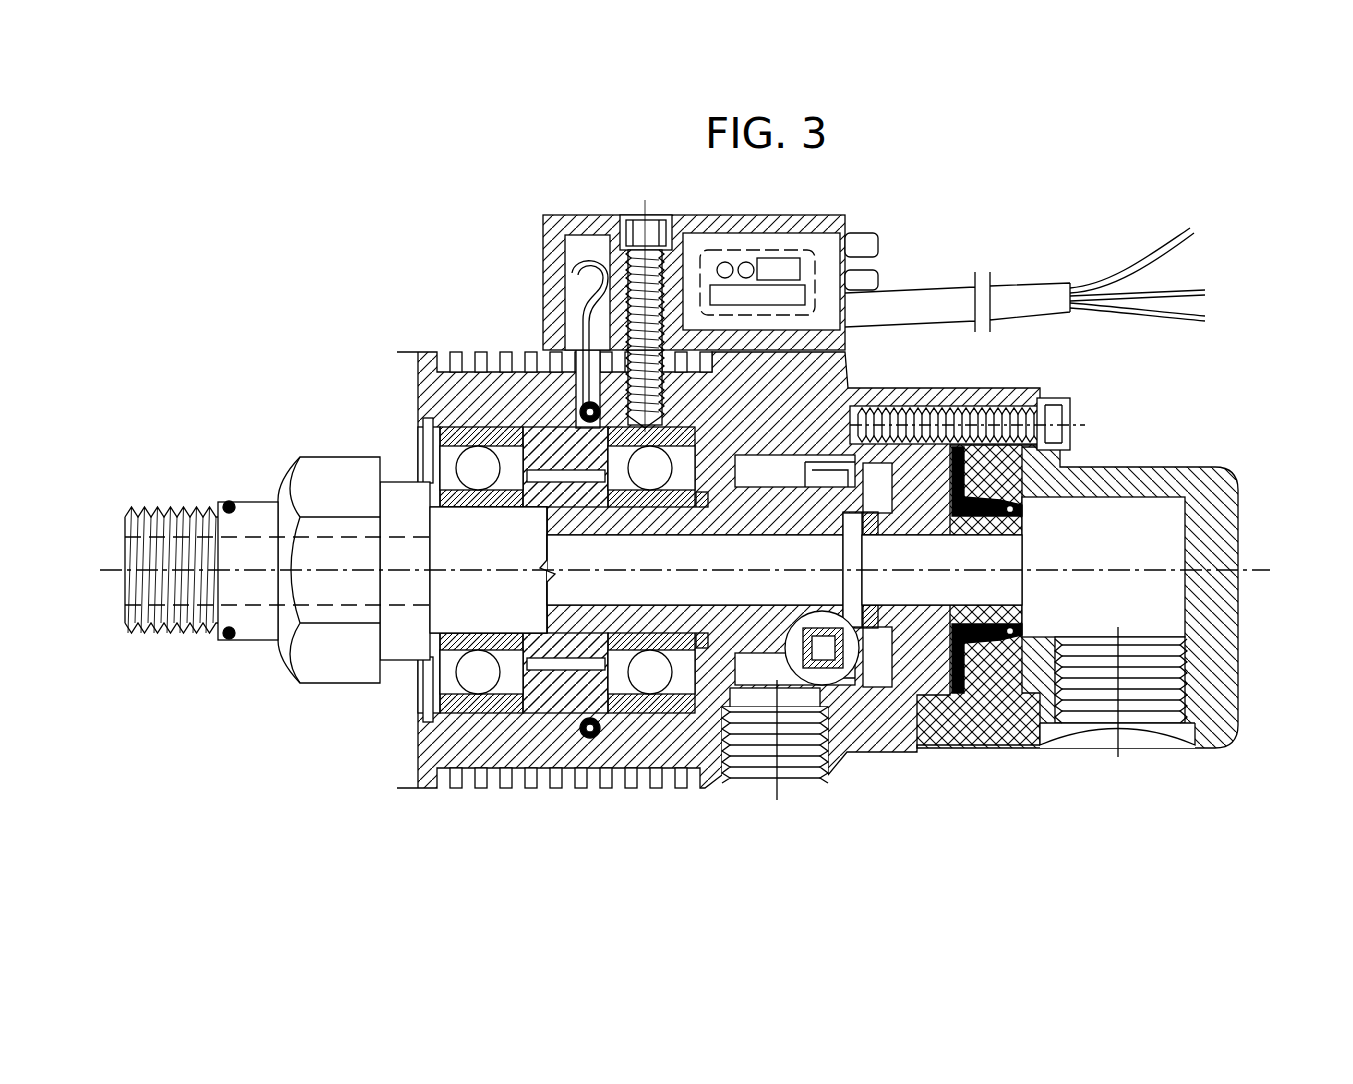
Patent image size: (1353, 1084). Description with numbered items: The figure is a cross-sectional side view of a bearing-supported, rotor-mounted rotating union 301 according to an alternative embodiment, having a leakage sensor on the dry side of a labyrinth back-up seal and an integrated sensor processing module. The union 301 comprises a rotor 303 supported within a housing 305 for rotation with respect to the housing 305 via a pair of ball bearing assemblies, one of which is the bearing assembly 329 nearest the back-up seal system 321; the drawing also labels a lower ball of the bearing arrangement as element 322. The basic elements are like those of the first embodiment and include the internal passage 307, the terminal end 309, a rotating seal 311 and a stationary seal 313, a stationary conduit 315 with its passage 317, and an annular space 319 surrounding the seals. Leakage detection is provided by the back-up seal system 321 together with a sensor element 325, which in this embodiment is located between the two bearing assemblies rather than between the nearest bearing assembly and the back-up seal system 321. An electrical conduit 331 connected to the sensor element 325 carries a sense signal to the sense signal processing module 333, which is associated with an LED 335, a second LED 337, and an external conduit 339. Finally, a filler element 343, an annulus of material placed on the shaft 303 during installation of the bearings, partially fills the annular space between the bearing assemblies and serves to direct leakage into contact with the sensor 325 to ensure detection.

The union 301 is at (318, 390).
The rotor 303 is at (577, 517).
The housing 305 is at (820, 366).
The internal passage 307 is at (706, 567).
The terminal end 309 is at (785, 612).
The rotating seal 311 is at (860, 580).
The stationary seal 313 is at (890, 630).
The stationary conduit 315 is at (970, 613).
The passage 317 is at (966, 563).
The annular space 319 is at (885, 448).
The back-up seal system 321 is at (821, 686).
The ball bearing 322 is at (478, 674).
The sensor element 325 is at (589, 728).
The ball bearing assembly 329 is at (656, 678).
The electrical conduit 331 is at (572, 262).
The sense signal processing module 333 is at (700, 265).
The LED 335 is at (878, 245).
The second LED 337 is at (872, 280).
The external conduit 339 is at (1045, 295).
The filler element 343 is at (555, 440).